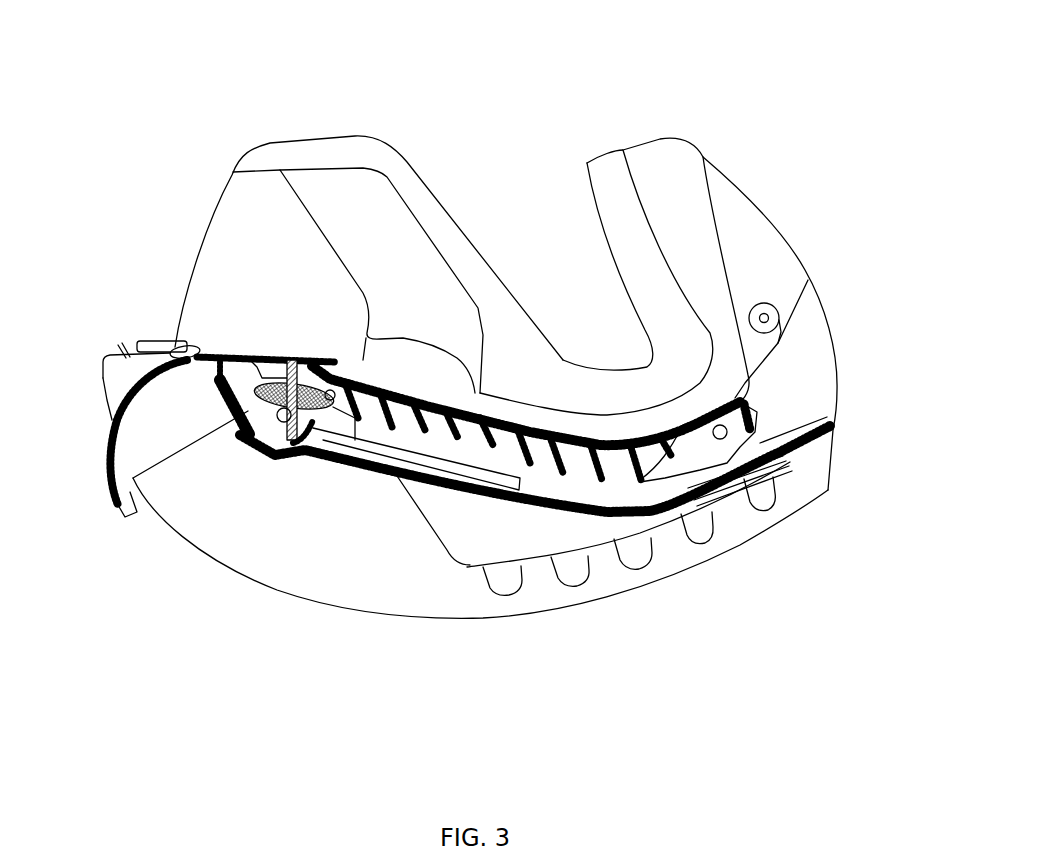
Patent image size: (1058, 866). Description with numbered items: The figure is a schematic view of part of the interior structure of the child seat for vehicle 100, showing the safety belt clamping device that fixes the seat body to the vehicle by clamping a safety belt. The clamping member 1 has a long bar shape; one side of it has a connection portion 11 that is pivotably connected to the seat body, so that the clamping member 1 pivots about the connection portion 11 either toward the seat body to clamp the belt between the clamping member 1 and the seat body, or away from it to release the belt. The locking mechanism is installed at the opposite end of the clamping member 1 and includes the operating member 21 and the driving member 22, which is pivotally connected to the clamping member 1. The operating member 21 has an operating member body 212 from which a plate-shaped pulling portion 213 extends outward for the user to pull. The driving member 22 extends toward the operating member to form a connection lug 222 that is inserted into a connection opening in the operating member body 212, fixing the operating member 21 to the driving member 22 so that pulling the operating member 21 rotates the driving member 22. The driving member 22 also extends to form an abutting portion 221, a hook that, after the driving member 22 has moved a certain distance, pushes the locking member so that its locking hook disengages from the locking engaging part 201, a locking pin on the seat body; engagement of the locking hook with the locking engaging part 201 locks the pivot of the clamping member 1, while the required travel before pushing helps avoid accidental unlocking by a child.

The child seat for vehicle 100 is at (773, 225).
The clamping member 1 is at (523, 492).
The connection portion 11 is at (719, 444).
The operating member 21 is at (71, 158).
The operating member body 212 is at (272, 357).
The pulling portion 213 is at (238, 357).
The locking engaging part 201 is at (292, 378).
The driving member 22 is at (272, 688).
The abutting portion 221 is at (246, 438).
The connection lug 222 is at (280, 425).